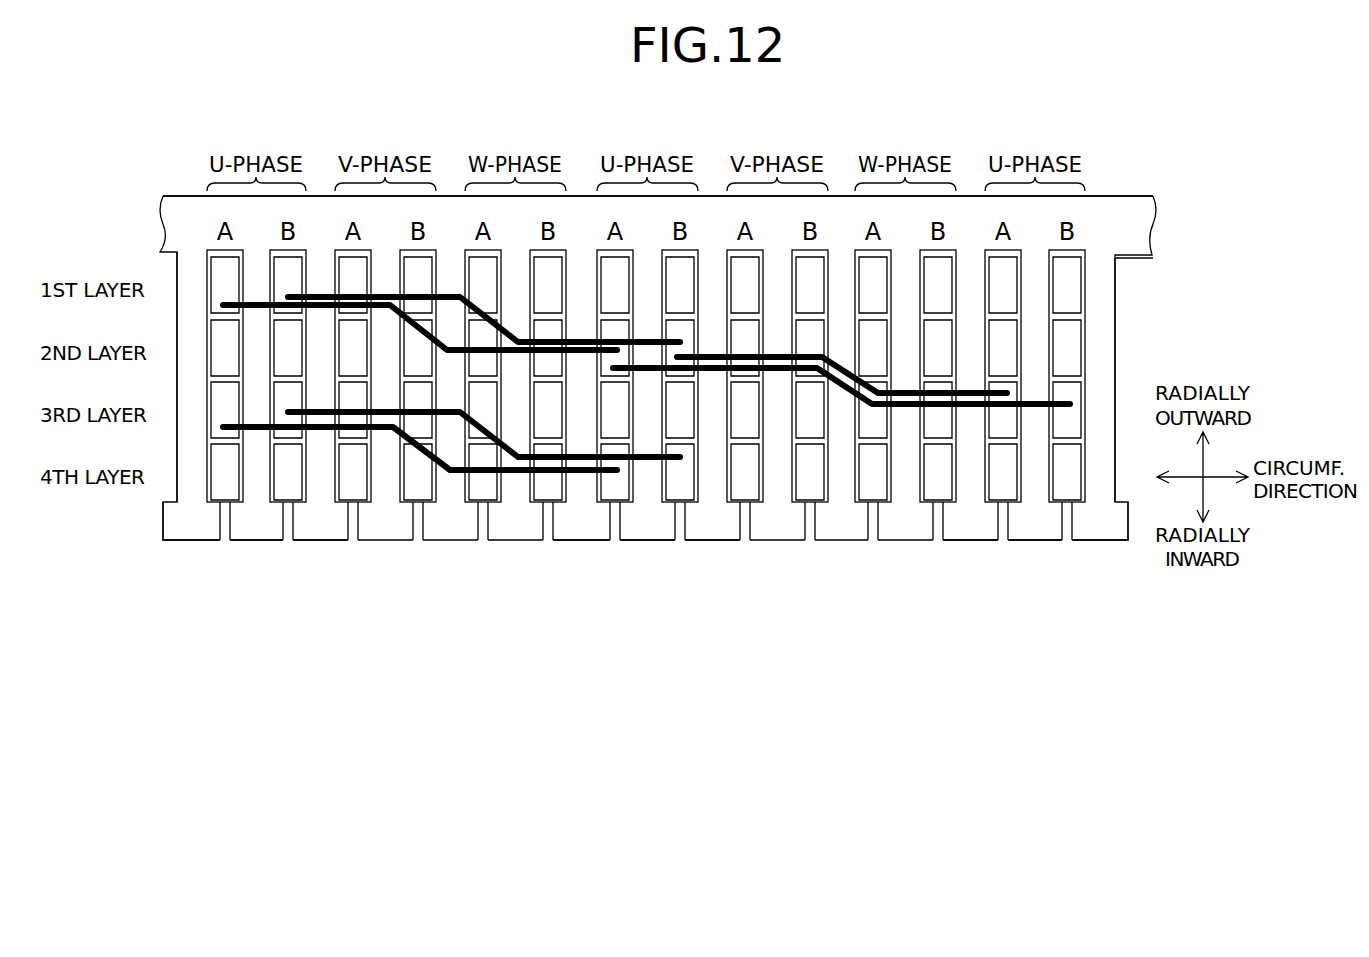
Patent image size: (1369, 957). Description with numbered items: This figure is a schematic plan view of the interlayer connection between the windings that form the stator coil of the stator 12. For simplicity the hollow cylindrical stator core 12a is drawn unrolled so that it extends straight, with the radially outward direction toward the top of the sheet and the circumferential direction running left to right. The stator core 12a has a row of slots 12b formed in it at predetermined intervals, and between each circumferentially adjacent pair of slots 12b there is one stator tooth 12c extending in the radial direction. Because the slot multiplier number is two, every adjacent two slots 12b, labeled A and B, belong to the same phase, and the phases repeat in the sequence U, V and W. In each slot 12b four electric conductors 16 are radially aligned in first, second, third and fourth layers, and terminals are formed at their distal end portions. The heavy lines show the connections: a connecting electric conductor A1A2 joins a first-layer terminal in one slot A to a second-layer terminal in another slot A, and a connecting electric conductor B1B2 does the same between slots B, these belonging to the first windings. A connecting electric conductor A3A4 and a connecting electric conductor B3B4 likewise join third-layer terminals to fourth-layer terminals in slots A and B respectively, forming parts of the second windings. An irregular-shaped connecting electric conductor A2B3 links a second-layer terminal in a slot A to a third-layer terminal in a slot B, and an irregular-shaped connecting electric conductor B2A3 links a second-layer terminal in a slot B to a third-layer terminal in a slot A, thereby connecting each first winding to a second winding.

The stator 12 is at (177, 184).
The stator core 12a is at (1127, 228).
The slots 12b is at (208, 335).
The stator tooth 12c is at (188, 523).
The electric conductors 16 is at (617, 268).
The connecting electric conductor B1B2 is at (322, 300).
The connecting electric conductor A1A2 is at (446, 330).
The irregular-shaped connecting electric conductor B2A3 is at (838, 350).
The irregular-shaped connecting electric conductor A2B3 is at (775, 375).
The connecting electric conductor A3A4 is at (323, 420).
The connecting electric conductor B3B4 is at (452, 412).